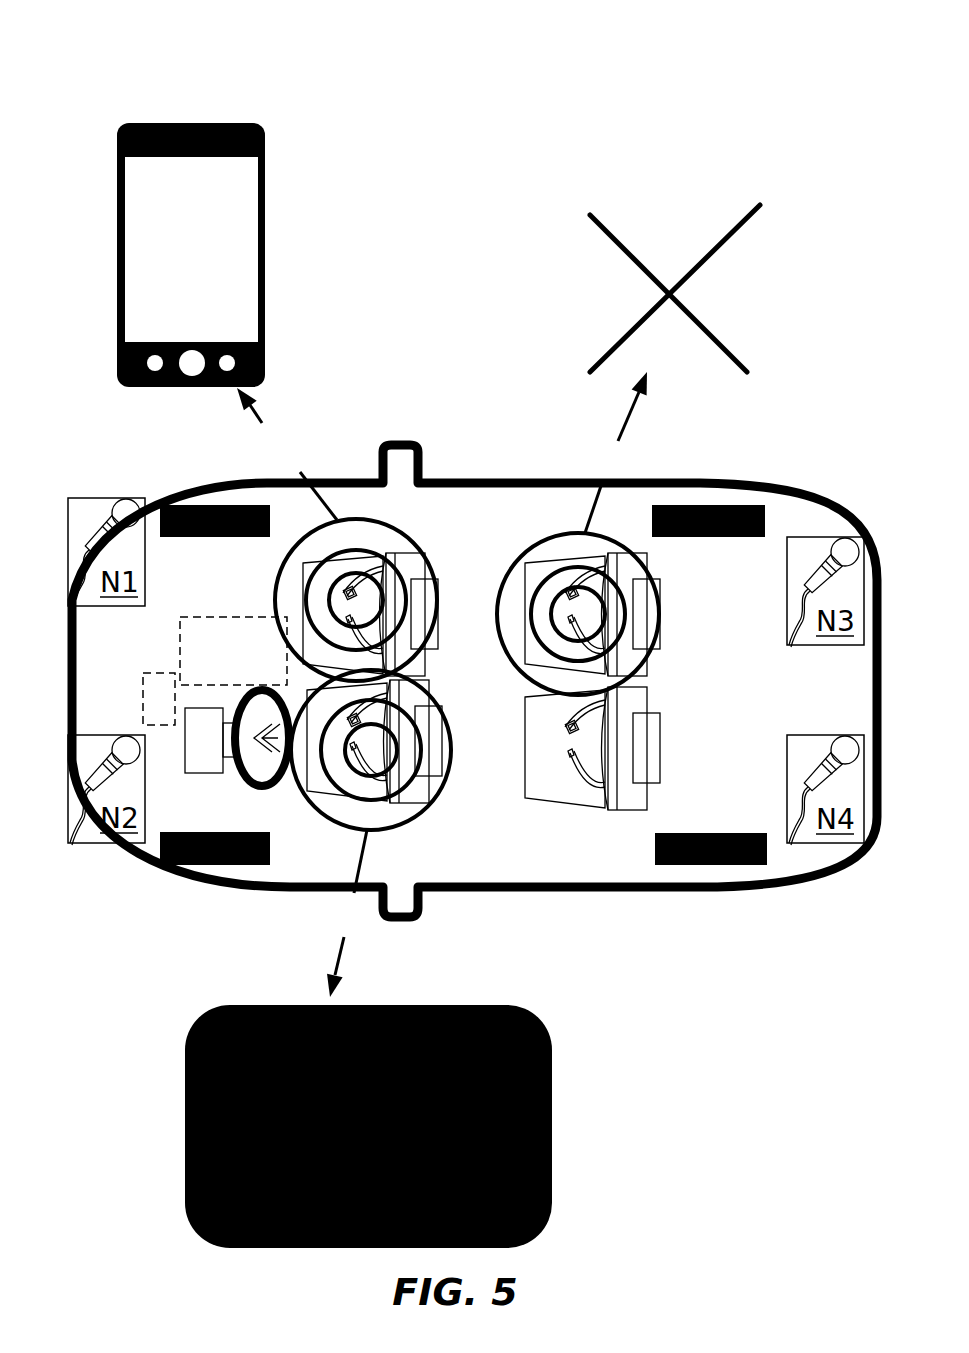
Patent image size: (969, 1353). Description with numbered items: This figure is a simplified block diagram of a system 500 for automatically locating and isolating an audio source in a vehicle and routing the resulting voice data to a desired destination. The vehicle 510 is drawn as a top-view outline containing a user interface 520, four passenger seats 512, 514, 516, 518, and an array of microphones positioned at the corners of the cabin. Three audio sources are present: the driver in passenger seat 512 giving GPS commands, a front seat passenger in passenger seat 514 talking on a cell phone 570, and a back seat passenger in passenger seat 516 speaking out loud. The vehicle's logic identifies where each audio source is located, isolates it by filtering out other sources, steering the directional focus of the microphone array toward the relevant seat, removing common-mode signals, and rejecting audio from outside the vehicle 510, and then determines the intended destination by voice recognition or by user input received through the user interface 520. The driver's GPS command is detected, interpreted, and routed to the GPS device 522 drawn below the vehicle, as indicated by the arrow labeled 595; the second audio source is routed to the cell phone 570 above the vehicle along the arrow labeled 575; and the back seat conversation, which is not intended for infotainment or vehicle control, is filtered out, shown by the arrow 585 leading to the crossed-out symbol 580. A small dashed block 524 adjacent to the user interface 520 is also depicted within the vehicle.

The system 500 is at (158, 57).
The vehicle 510 is at (852, 707).
The passenger seat 512 is at (430, 808).
The passenger seat 514 is at (433, 565).
The passenger seat 516 is at (662, 612).
The passenger seat 518 is at (662, 745).
The user interface 520 is at (256, 667).
The GPS device 522 is at (543, 1055).
The communication module 524 is at (143, 702).
The cell phone 570 is at (266, 243).
The audio stream to mobile phone 575 is at (287, 454).
The cancelled audio 580 is at (750, 225).
The cancelled audio stream 585 is at (616, 452).
The audio stream to navigation device 595 is at (347, 913).